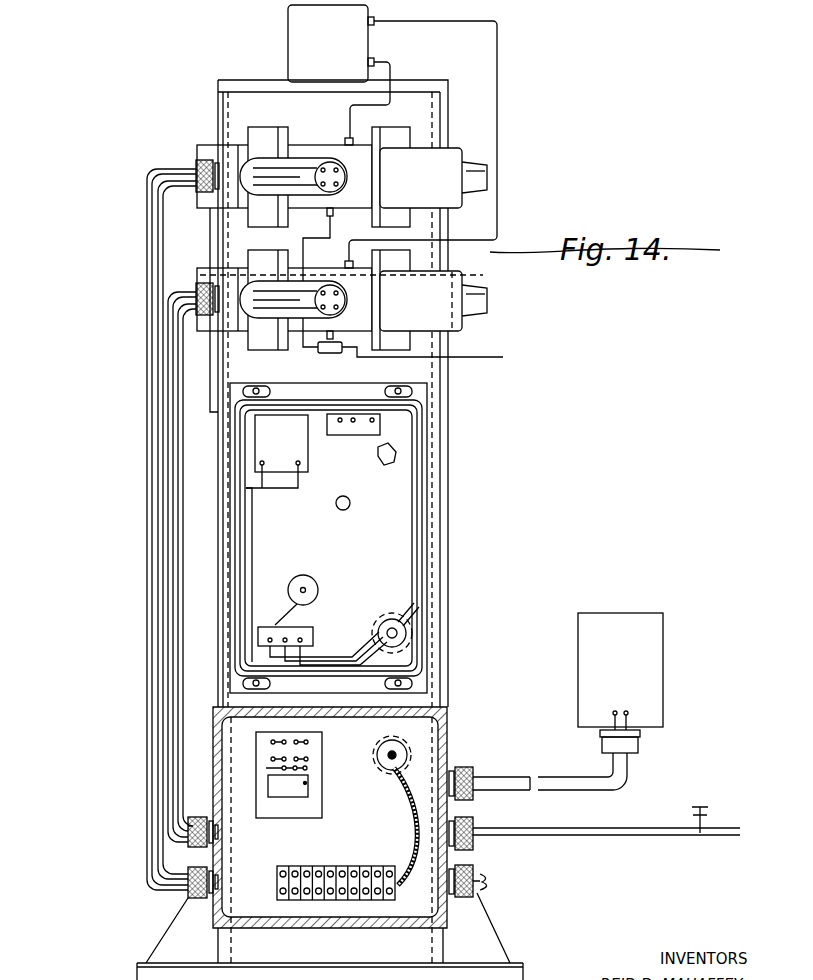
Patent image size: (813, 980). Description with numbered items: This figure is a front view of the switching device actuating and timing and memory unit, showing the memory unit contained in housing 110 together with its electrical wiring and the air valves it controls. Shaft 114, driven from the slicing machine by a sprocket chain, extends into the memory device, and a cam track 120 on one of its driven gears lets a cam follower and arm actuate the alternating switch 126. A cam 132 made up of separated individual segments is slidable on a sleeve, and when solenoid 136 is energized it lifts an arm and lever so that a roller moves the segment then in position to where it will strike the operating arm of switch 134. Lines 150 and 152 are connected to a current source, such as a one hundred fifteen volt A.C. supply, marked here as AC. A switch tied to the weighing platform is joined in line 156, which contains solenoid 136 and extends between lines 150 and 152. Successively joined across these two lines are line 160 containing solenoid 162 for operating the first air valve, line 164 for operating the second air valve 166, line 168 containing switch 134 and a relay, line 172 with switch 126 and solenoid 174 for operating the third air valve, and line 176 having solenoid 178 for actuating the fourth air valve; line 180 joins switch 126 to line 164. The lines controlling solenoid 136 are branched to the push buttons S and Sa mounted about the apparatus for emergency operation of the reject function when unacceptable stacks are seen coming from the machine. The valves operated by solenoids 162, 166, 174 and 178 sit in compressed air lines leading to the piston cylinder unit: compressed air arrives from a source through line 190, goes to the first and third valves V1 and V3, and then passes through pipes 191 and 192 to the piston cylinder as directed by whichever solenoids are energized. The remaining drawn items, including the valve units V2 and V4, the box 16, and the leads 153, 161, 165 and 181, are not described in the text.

The control unit 16 is at (297, 35).
The pipe 191 is at (390, 72).
The pipe 192 is at (498, 62).
The line 160 is at (335, 168).
The line 176 is at (323, 168).
The solenoid 178 is at (197, 152).
The solenoid 162 is at (452, 157).
The lead wire 153 is at (325, 187).
The line 164 is at (325, 290).
The second air valve 166 is at (197, 272).
The line 172 is at (340, 296).
The solenoid 174 is at (460, 325).
The line 150 is at (320, 353).
The line 190 is at (503, 360).
The alternating switch 126 is at (341, 418).
The line 180 is at (374, 420).
The solenoid 136 is at (277, 451).
The line 152 is at (262, 463).
The cam track 120 is at (393, 457).
The line 156 is at (298, 470).
The shaft 114 is at (350, 504).
The housing 110 is at (448, 520).
The cam 132 is at (318, 590).
The line 168 is at (286, 638).
The switch 134 is at (258, 638).
The relay contact 165 is at (292, 733).
The lead wire 161 is at (307, 768).
The relay 181 is at (285, 745).
The first valve V1 is at (415, 160).
The solenoid valve V2 is at (260, 257).
The third valve V3 is at (463, 277).
The solenoid valve V4 is at (235, 157).
The push button S is at (622, 615).
The push button Sa is at (717, 791).
The AC power supply AC is at (531, 885).